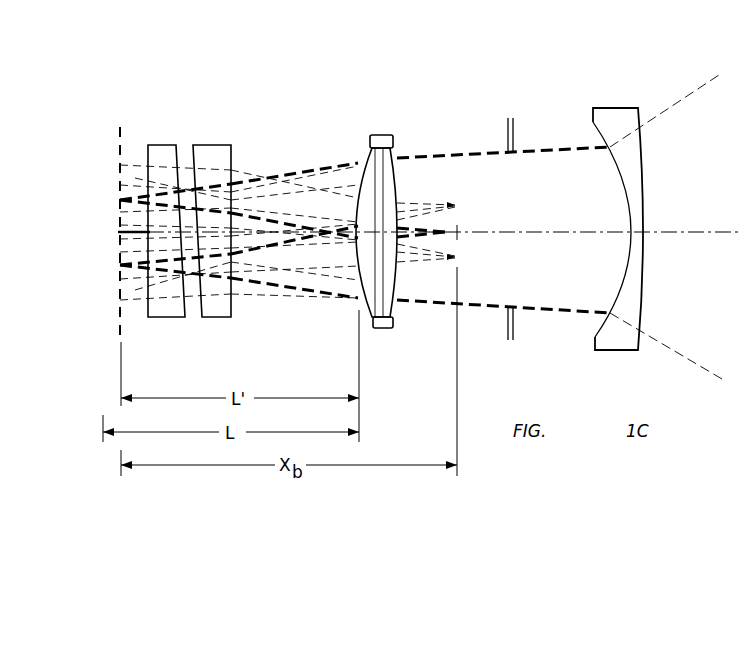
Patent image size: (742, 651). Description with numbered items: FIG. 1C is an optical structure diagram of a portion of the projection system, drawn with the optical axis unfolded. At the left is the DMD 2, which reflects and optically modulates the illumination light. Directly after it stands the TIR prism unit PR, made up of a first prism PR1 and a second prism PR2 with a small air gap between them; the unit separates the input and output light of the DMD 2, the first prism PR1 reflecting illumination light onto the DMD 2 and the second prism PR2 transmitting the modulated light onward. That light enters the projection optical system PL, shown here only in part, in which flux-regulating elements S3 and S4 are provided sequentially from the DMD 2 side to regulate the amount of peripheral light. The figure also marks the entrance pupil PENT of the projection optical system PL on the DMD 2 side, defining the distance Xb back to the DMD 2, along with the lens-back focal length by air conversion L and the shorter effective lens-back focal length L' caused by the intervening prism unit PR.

The DMD 2 is at (118, 155).
The TIR prism unit PR is at (195, 232).
The first prism PR1 is at (166, 319).
The second prism PR2 is at (222, 319).
The flux-regulating element S3 is at (380, 134).
The flux-regulating element S4 is at (486, 226).
The projection optical system PL is at (500, 197).
The entrance pupil PENT is at (457, 236).